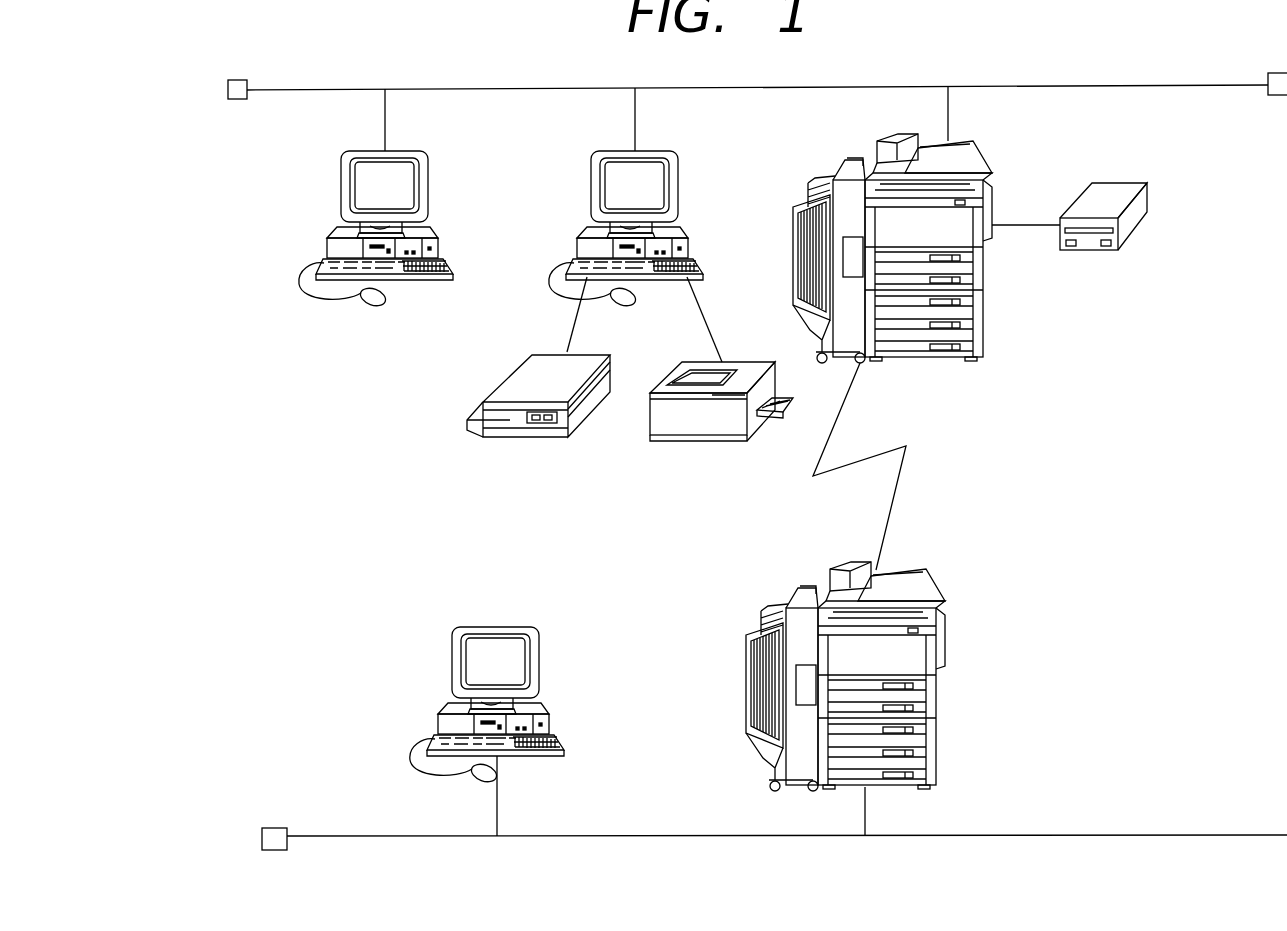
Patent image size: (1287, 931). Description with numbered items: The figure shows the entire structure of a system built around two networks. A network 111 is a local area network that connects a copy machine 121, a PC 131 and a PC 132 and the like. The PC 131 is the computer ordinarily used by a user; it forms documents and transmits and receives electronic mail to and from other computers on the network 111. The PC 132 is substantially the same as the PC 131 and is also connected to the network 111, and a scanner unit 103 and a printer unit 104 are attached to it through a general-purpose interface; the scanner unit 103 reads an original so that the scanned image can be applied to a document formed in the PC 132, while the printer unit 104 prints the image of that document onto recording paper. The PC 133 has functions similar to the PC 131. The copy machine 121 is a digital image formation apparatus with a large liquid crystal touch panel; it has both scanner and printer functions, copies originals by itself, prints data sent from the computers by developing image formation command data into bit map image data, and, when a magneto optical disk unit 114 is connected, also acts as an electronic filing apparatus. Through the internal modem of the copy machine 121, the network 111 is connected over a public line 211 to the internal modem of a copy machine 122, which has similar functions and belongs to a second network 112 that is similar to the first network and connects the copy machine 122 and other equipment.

The network 111 is at (845, 86).
The network 112 is at (1085, 835).
The magneto optical disk unit 114 is at (1148, 200).
The copy machine 121 is at (992, 275).
The copy machine 122 is at (890, 676).
The PC 131 is at (410, 280).
The PC 132 is at (626, 248).
The PC 133 is at (487, 673).
The scanner unit 103 is at (543, 438).
The printer unit 104 is at (710, 443).
The public line 211 is at (888, 512).